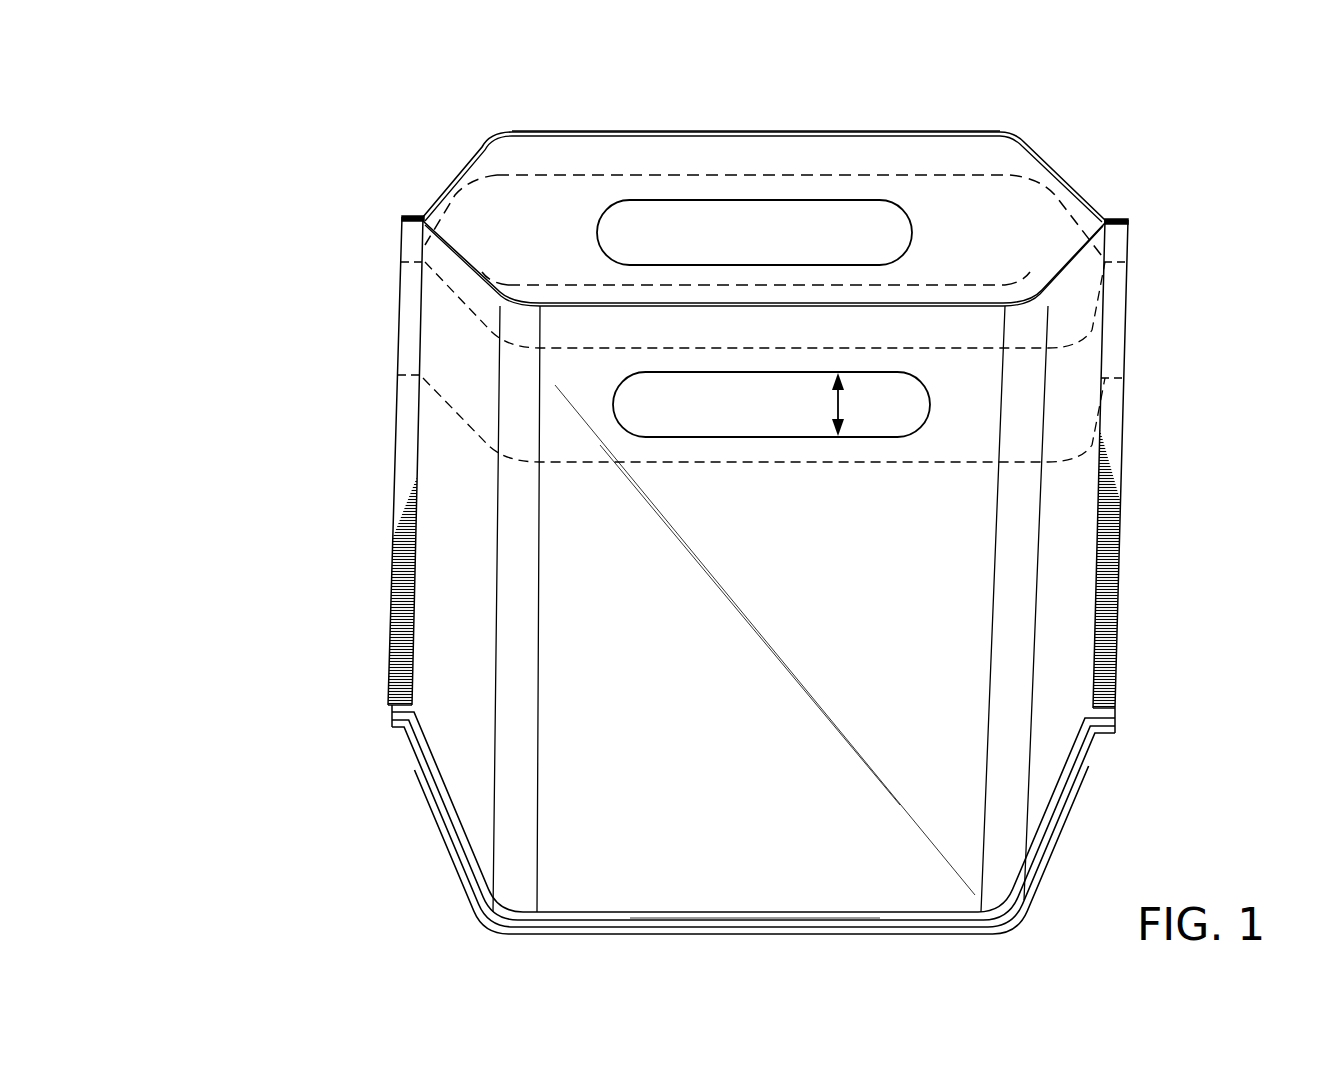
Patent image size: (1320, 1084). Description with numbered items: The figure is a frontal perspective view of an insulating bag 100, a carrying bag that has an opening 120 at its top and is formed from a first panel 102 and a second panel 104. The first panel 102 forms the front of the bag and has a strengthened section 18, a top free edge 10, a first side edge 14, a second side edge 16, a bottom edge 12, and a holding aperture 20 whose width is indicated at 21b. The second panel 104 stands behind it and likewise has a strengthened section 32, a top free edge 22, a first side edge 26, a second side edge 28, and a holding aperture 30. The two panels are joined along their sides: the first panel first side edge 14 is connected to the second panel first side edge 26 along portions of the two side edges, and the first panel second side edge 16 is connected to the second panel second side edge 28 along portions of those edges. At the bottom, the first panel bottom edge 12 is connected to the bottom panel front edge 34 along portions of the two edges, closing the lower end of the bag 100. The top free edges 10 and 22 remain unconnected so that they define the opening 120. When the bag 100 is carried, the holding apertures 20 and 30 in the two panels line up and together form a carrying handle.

The insulating bag 100 is at (292, 198).
The top free edge 10 is at (1070, 266).
The bottom edge 12 is at (505, 926).
The first side edge 14 is at (1117, 242).
The second side edge 16 is at (412, 233).
The strengthened section 18 is at (452, 340).
The holding aperture 20 is at (775, 413).
The width 21b is at (838, 405).
The top free edge 22 is at (705, 132).
The first side edge 26 is at (1117, 220).
The second side edge 28 is at (408, 215).
The holding aperture 30 is at (768, 242).
The strengthened section 32 is at (530, 226).
The bottom panel front edge 34 is at (1103, 728).
The first panel 102 is at (756, 691).
The second panel 104 is at (853, 155).
The opening 120 is at (943, 240).